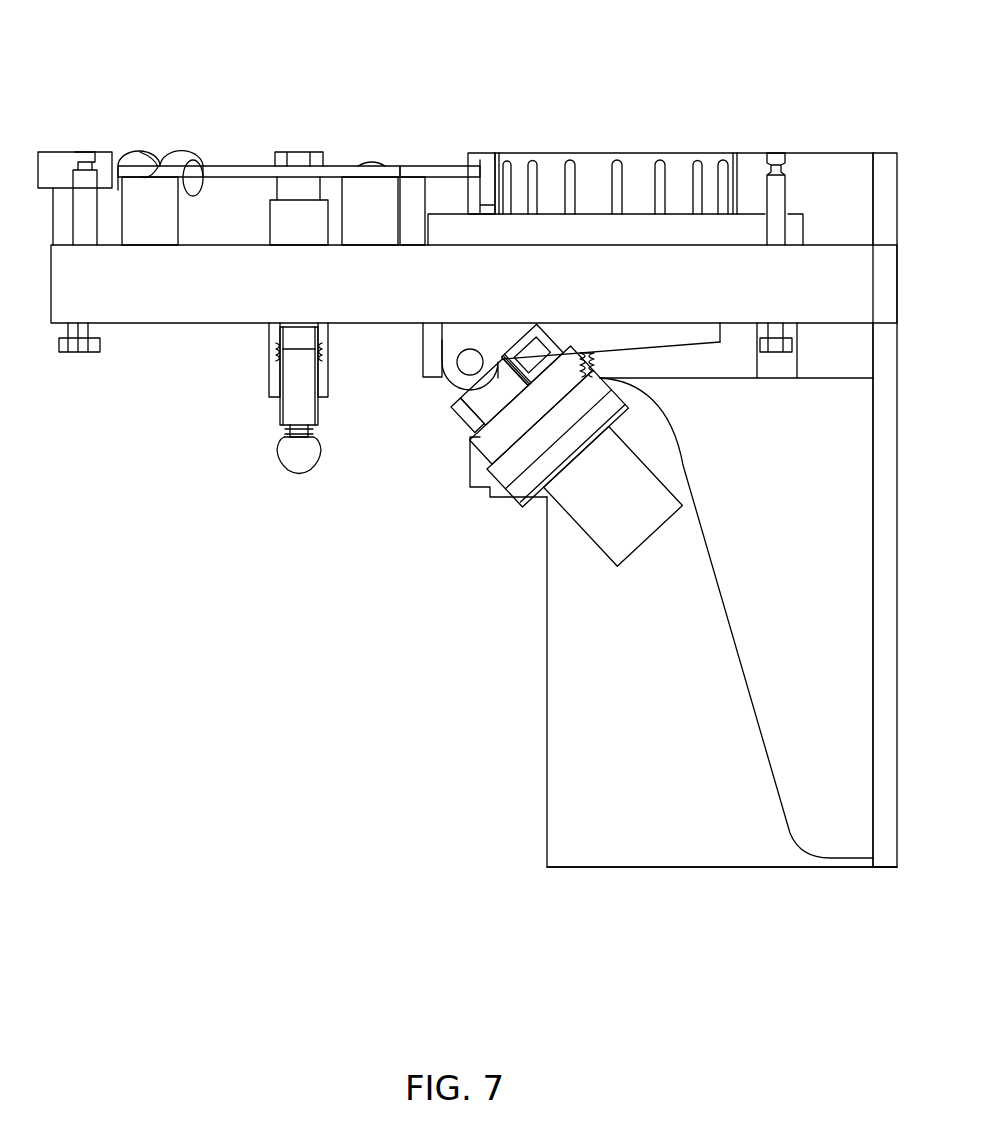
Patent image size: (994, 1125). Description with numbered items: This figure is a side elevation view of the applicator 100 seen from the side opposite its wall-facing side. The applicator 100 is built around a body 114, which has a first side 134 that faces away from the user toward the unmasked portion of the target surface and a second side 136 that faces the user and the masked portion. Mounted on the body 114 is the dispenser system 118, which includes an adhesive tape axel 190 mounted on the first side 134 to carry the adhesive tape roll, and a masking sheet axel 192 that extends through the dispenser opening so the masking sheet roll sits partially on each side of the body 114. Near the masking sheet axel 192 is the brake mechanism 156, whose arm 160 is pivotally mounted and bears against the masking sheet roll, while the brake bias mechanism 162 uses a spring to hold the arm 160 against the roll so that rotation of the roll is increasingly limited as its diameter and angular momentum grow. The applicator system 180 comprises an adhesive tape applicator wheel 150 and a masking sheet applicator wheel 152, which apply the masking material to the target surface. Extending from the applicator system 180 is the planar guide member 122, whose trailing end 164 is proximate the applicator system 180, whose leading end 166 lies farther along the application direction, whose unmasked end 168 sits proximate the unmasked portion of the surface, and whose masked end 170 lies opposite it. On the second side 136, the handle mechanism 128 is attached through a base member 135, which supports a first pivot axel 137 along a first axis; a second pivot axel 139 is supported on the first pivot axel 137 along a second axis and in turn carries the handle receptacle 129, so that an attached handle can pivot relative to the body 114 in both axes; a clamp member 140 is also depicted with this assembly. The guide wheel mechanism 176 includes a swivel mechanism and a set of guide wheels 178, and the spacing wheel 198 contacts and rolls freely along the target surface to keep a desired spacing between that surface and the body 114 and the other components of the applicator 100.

The applicator 100 is at (72, 62).
The body 114 is at (60, 282).
The dispenser system 118 is at (588, 137).
The guide member 122 is at (588, 722).
The handle mechanism 128 is at (560, 442).
The handle receptacle 129 is at (661, 500).
The first side 134 is at (200, 243).
The base member 135 is at (548, 332).
The second side 136 is at (168, 325).
The first pivot axel 137 is at (460, 350).
The second pivot axel 139 is at (497, 380).
The clamp arm 140 is at (632, 404).
The adhesive tape applicator wheel 150 is at (490, 168).
The masking sheet applicator wheel 152 is at (475, 487).
The brake mechanism 156 is at (342, 367).
The arm 160 is at (293, 406).
The brake bias mechanism 162 is at (300, 346).
The trailing end 164 is at (900, 448).
The leading end 166 is at (547, 834).
The unmasked end 168 is at (747, 152).
The masked end 170 is at (640, 868).
The guide wheel mechanism 176 is at (136, 136).
The set of guide wheels 178 is at (195, 160).
The applicator system 180 is at (438, 130).
The adhesive tape axel 190 is at (638, 163).
The masking sheet axel 192 is at (317, 462).
The spacing wheel 198 is at (57, 160).